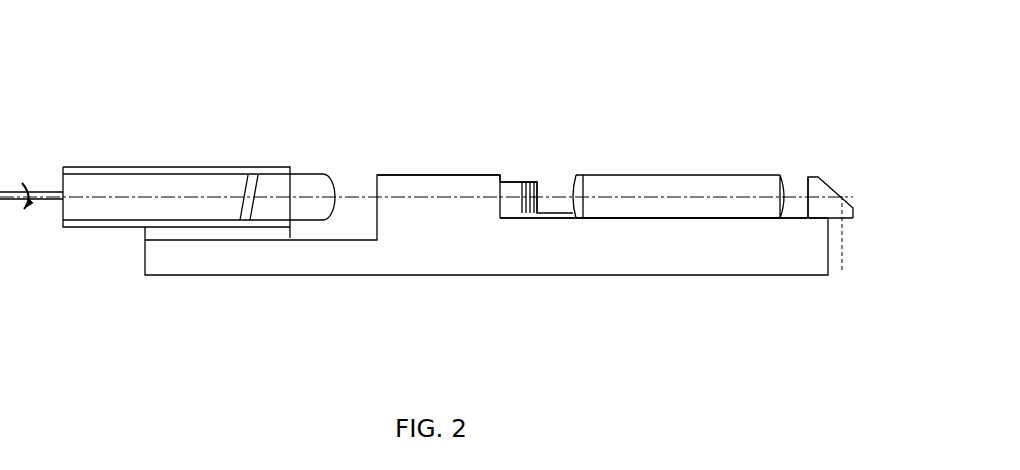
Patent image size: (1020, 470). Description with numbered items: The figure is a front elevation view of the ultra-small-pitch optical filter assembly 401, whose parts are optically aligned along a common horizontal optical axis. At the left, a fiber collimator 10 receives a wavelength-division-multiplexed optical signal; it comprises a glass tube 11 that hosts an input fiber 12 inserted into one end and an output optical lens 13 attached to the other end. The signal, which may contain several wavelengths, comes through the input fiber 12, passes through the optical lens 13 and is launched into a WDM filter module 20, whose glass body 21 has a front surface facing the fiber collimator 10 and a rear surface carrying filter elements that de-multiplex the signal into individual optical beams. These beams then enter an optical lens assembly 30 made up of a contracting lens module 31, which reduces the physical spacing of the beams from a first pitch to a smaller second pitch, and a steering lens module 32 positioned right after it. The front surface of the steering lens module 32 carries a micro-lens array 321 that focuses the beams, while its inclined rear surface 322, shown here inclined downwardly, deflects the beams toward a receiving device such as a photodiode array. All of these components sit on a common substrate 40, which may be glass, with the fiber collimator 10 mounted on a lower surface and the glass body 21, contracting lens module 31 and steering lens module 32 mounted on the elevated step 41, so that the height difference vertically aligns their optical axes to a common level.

The ultra-small-pitch optical filter assembly 401 is at (132, 57).
The fiber collimator 10 is at (125, 229).
The glass tube 11 is at (183, 172).
The input fiber 12 is at (103, 188).
The output optical lens 13 is at (307, 175).
The WDM filter module 20 is at (428, 169).
The glass body 21 is at (458, 182).
The optical lens assembly 30 is at (737, 179).
The contracting lens module 31 is at (685, 183).
The steering lens module 32 is at (824, 190).
The micro-lens array 321 is at (805, 198).
The inclined rear surface 322 is at (848, 198).
The substrate 40 is at (462, 276).
The step 41 is at (617, 219).